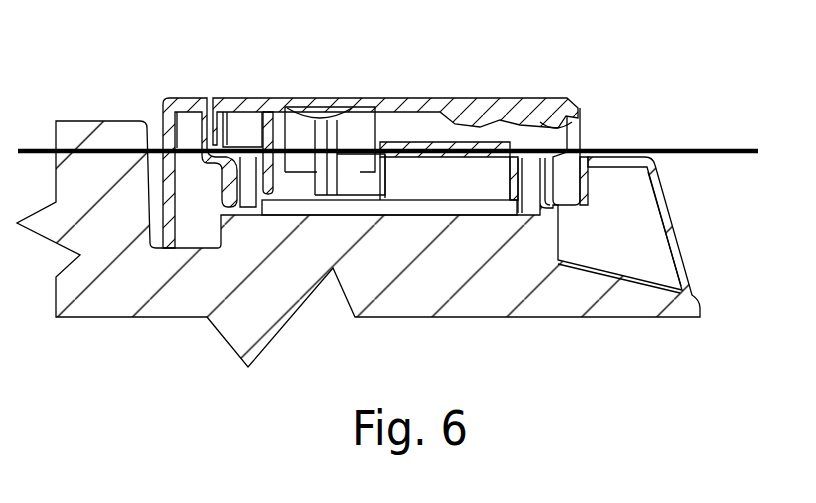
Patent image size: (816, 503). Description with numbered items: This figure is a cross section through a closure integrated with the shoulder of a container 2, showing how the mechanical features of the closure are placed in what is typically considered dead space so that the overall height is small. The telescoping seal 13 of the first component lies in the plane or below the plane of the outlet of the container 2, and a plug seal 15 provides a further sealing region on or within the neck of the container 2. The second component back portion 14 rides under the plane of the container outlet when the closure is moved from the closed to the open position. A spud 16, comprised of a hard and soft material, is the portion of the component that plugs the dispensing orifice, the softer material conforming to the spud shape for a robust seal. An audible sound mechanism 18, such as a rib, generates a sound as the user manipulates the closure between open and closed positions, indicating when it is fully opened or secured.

The container 2 is at (525, 125).
The seal 13 is at (273, 138).
The second component back portion 14 is at (588, 117).
The plug seal 15 is at (520, 190).
The spud 16 is at (333, 97).
The audible sound mechanism 18 is at (582, 123).